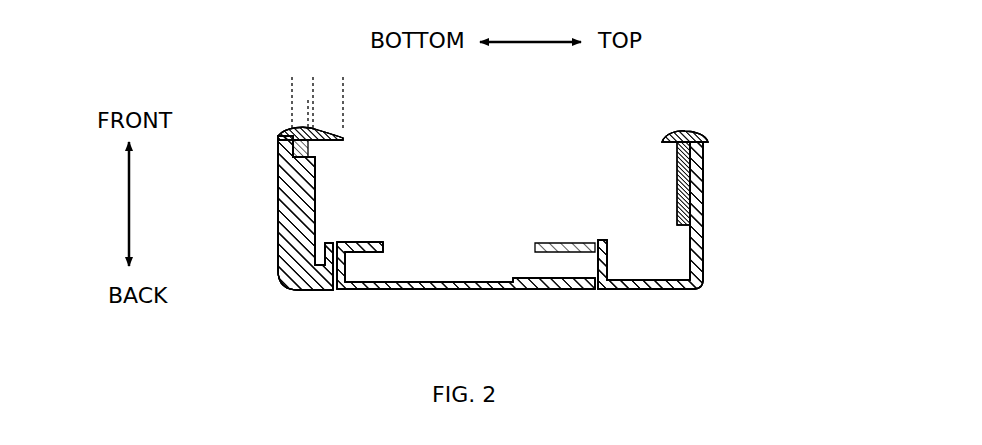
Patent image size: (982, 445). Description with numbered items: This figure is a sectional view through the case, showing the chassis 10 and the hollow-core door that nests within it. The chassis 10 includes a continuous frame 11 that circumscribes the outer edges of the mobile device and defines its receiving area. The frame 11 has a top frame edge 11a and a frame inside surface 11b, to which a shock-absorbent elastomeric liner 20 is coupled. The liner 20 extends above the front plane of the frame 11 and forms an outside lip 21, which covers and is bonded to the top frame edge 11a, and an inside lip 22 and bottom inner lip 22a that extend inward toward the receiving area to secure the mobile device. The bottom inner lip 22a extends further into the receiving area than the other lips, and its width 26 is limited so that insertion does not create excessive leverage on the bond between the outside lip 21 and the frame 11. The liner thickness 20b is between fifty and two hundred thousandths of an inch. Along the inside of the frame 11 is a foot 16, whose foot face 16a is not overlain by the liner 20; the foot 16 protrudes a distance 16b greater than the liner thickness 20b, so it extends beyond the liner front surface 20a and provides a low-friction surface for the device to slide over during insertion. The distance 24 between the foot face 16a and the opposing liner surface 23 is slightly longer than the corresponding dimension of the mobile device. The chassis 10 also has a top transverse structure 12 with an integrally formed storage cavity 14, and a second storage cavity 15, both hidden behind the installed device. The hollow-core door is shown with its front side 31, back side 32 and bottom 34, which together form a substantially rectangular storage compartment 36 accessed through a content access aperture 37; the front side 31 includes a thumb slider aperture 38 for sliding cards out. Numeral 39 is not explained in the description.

The chassis 10 is at (277, 268).
The frame 11 is at (270, 142).
The top frame edge 11a is at (279, 139).
The frame inside surface 11b is at (692, 209).
The top transverse structure 12 is at (666, 289).
The storage cavity 14 is at (650, 262).
The storage cavity 15 is at (318, 269).
The foot 16 is at (304, 232).
The foot face 16a is at (317, 210).
The foot protrusion distance 16b is at (270, 122).
The liner 20 is at (678, 216).
The liner front surface 20a is at (310, 153).
The liner thickness 20b is at (270, 110).
The outside lip 21 is at (285, 136).
The inside lip 22 is at (672, 138).
The bottom inner lip 22a is at (338, 136).
The opposing liner surface 23 is at (676, 162).
The distance 24 is at (674, 195).
The bottom inner lip width 26 is at (283, 92).
The front side 31 is at (374, 242).
The back side 32 is at (425, 287).
The bottom 34 is at (343, 271).
The storage compartment 36 is at (455, 275).
The content access aperture 37 is at (593, 268).
The thumb slider aperture 38 is at (495, 241).
The plate surface 39 is at (471, 287).